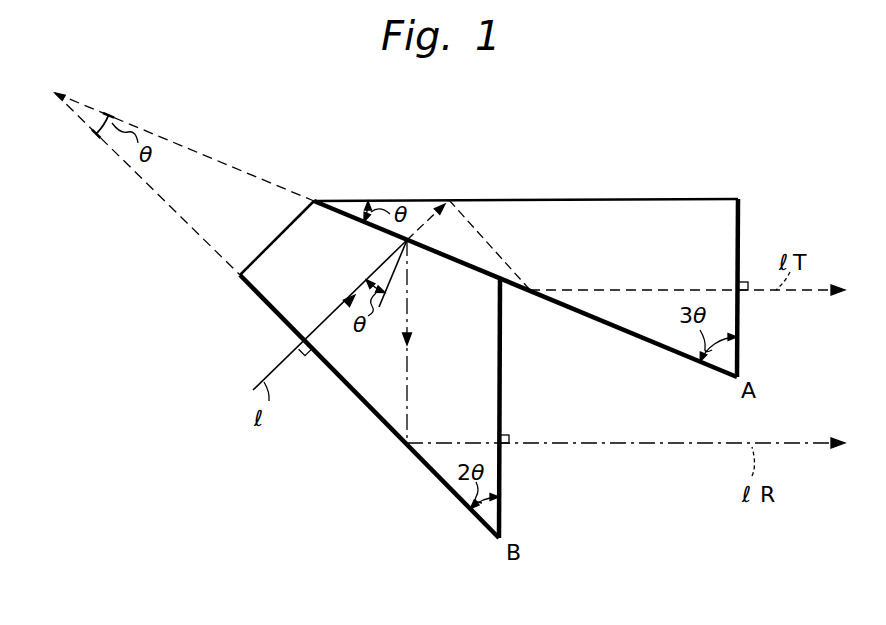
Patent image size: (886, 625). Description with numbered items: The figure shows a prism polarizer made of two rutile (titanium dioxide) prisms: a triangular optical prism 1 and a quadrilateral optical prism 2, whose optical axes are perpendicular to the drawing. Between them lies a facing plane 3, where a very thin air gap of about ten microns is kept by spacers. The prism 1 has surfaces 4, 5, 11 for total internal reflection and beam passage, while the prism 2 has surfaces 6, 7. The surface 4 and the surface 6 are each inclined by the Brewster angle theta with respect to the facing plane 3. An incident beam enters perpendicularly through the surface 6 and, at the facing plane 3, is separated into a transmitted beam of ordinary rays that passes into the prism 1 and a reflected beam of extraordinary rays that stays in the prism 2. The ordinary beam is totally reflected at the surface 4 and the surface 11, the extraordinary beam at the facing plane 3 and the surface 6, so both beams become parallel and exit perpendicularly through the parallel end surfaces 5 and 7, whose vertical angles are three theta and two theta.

The optical prism of triangular prism shape 1 is at (577, 210).
The optical prism of quadrilateral prism shape 2 is at (330, 344).
The facing plane 3 is at (432, 250).
The surface 4 is at (624, 198).
The surface 5 is at (742, 310).
The surface 6 is at (262, 299).
The surface 7 is at (503, 468).
The surface 11 is at (598, 319).